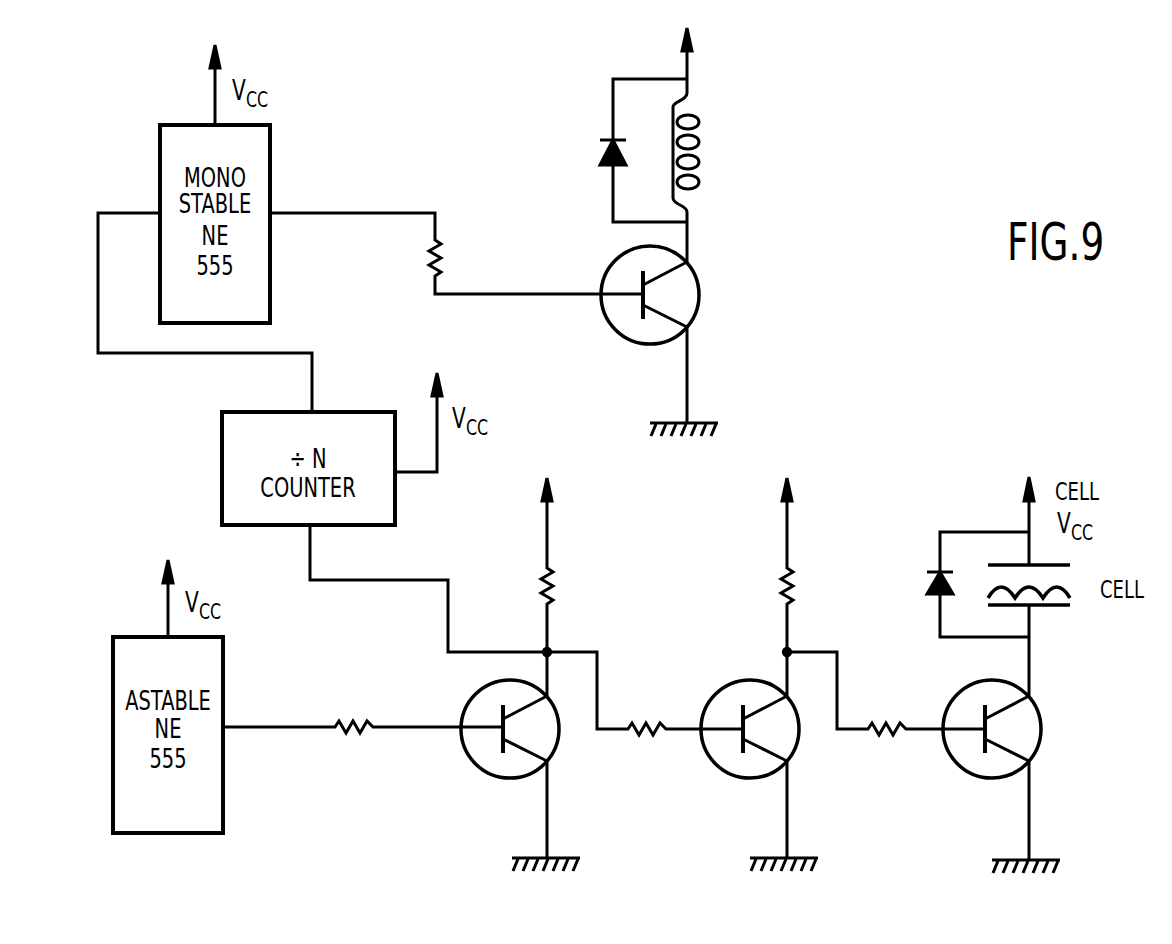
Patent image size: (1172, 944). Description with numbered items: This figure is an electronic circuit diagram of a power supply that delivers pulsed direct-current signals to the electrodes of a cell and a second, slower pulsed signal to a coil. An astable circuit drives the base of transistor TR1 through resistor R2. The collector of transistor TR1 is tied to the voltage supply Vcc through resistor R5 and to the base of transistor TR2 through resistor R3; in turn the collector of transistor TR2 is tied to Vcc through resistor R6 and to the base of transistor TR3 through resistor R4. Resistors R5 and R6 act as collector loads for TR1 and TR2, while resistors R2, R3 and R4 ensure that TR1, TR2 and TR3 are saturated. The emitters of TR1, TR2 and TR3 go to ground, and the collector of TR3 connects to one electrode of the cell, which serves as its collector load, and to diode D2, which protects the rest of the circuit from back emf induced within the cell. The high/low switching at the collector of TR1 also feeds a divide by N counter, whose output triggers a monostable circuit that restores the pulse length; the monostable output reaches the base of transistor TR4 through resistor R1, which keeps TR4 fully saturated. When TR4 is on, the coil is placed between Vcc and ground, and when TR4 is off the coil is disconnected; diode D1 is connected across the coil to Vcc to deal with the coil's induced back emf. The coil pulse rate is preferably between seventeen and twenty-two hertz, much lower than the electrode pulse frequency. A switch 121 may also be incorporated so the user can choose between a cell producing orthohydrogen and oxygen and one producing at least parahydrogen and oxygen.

The switch 121 is at (713, 146).
The resistor R1 is at (456, 253).
The resistor R2 is at (363, 707).
The resistor R3 is at (645, 693).
The resistor R4 is at (886, 693).
The resistor R5 is at (570, 565).
The resistor R6 is at (813, 565).
The transistor TR1 is at (531, 760).
The transistor TR2 is at (769, 760).
The transistor TR3 is at (1014, 739).
The transistor TR4 is at (672, 329).
The diode D1 is at (632, 150).
The diode D2 is at (961, 584).